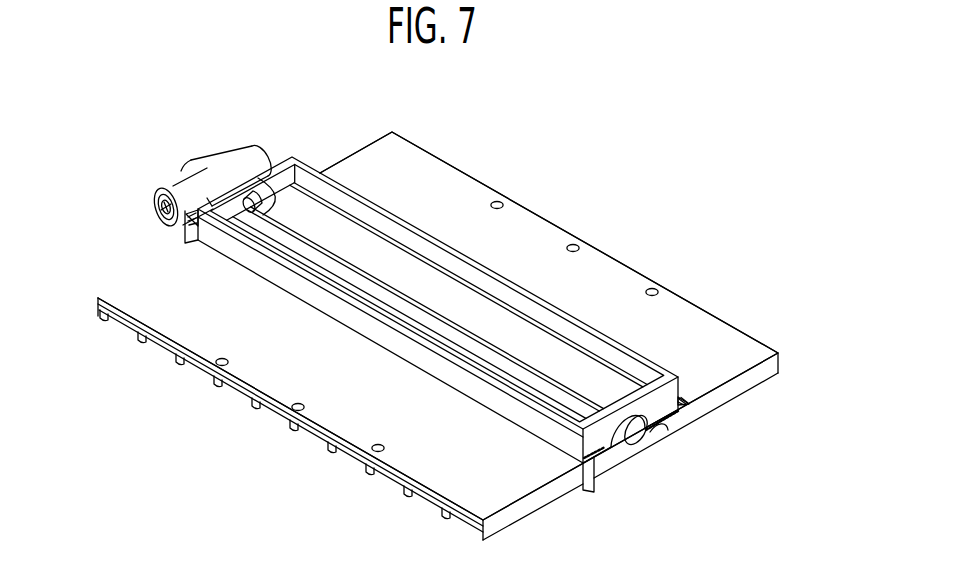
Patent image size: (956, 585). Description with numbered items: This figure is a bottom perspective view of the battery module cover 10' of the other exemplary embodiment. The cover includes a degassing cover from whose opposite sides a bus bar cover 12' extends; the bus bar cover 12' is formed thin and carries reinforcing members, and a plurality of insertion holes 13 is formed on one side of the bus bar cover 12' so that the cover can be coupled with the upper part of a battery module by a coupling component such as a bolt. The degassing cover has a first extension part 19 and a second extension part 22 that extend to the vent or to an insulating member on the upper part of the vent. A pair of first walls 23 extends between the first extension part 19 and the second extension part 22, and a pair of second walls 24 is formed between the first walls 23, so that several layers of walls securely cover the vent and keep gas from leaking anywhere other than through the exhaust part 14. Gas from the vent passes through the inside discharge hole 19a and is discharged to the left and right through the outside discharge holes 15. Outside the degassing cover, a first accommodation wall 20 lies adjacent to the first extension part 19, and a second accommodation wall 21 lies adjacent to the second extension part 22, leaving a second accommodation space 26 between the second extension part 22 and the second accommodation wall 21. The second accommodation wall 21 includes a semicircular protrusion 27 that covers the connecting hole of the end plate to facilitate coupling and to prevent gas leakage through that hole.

The battery module cover 10' is at (441, 326).
The bus bar cover 12' is at (438, 344).
The insertion hole 13 is at (651, 290).
The exhaust part 14 is at (174, 181).
The outside discharge hole 15 is at (153, 218).
The first extension part 19 is at (245, 156).
The inside discharge hole 19a is at (264, 207).
The first accommodation wall 20 is at (193, 227).
The second accommodation wall 21 is at (681, 413).
The second extension part 22 is at (618, 433).
The first walls 23 is at (572, 358).
The second walls 24 is at (333, 267).
The second accommodation space 26 is at (684, 402).
The protrusion 27 is at (633, 433).